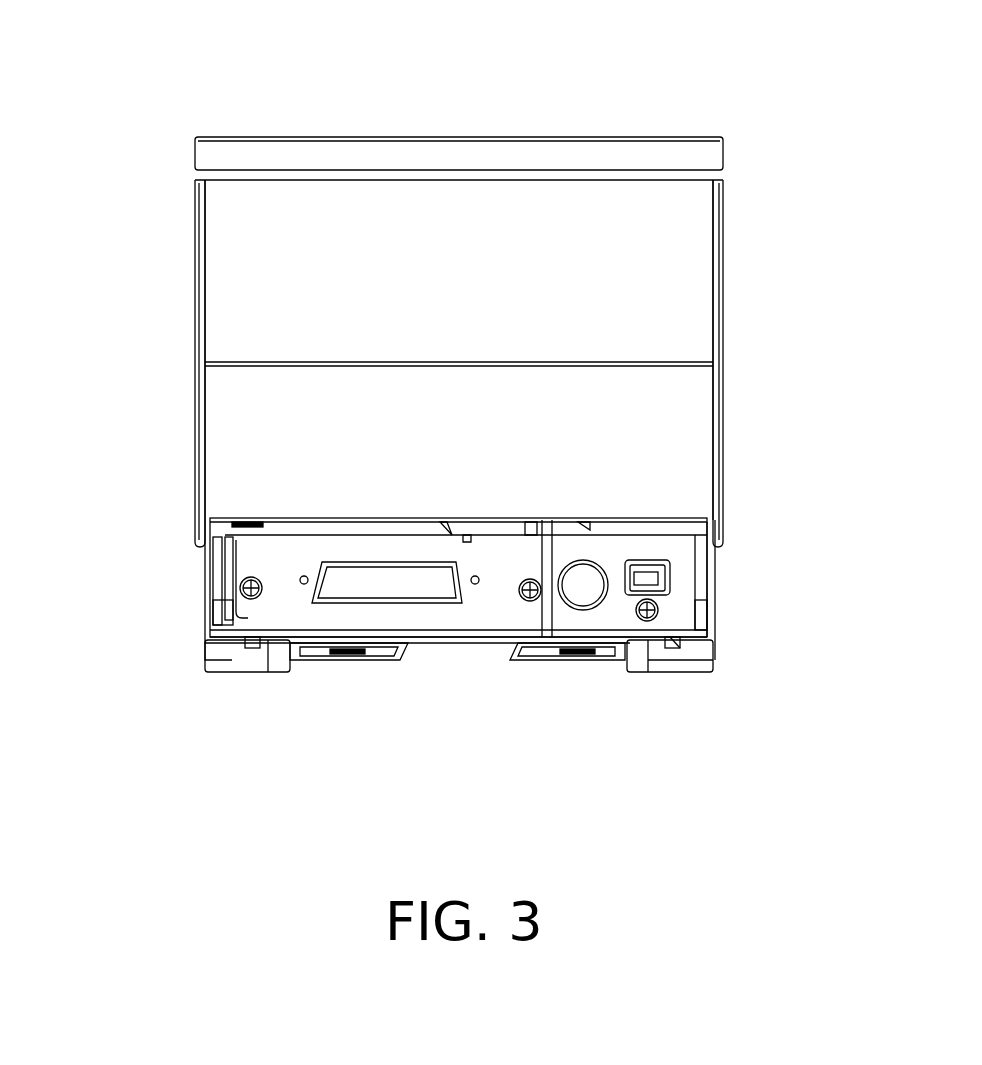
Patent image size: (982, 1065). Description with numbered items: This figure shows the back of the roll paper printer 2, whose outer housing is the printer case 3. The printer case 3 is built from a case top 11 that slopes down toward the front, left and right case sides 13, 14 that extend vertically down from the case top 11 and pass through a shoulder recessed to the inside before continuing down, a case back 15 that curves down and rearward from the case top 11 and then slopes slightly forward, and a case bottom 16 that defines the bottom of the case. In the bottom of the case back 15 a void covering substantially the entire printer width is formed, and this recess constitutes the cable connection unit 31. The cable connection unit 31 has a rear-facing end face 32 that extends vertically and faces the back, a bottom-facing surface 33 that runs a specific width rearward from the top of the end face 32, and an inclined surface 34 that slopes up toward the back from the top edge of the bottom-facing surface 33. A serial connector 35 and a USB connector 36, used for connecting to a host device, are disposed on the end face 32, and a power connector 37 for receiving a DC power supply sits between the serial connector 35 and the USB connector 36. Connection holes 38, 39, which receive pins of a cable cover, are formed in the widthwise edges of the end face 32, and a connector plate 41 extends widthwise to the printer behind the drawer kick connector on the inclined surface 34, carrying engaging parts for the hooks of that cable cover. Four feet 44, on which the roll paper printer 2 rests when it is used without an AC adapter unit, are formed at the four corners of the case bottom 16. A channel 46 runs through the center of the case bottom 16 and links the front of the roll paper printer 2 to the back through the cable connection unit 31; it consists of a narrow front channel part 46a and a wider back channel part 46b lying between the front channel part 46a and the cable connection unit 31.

The roll paper printer 2 is at (740, 94).
The printer case 3 is at (390, 134).
The case top 11 is at (575, 137).
The case side 13 is at (723, 270).
The case side 14 is at (195, 270).
The case back 15 is at (370, 265).
The case bottom 16 is at (213, 673).
The cable connection unit 31 is at (505, 567).
The end face 32 is at (315, 663).
The bottom-facing surface 33 is at (335, 538).
The inclined surface 34 is at (290, 526).
The RS-232 connector 35 is at (362, 605).
The USB connector 36 is at (670, 580).
The power connector 37 is at (588, 610).
The connection hole 38 is at (700, 615).
The connection hole 39 is at (220, 622).
The connector plate 41 is at (246, 522).
The feet 44 is at (248, 673).
The channel 46 is at (468, 662).
The front channel part 46a is at (440, 663).
The back channel part 46b is at (540, 663).